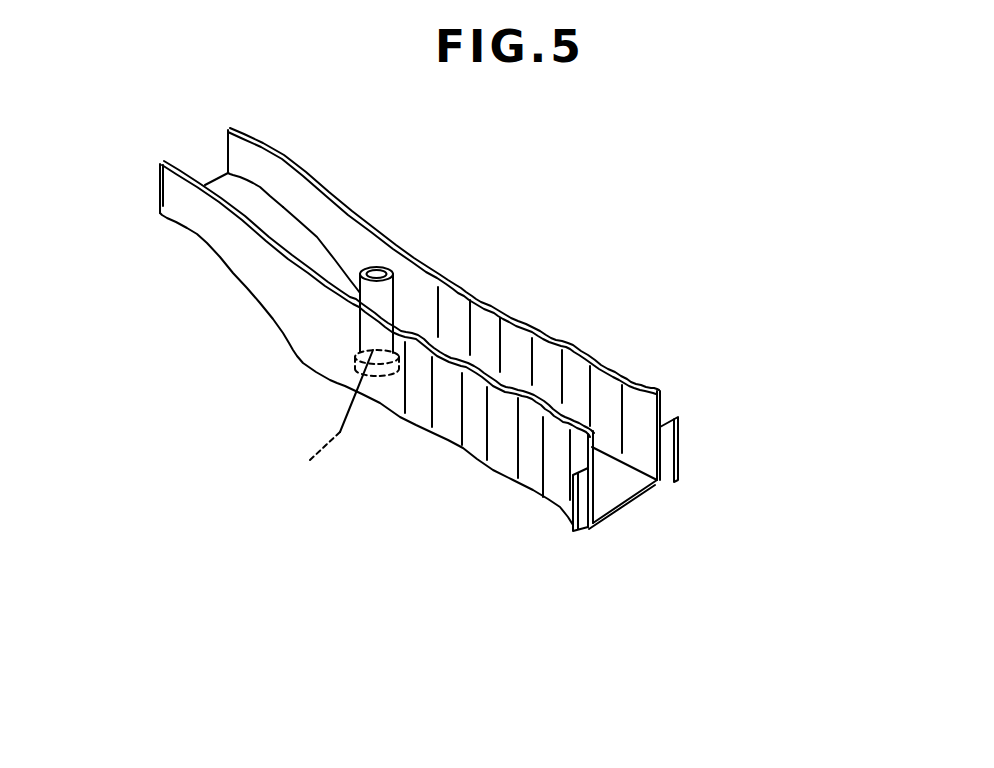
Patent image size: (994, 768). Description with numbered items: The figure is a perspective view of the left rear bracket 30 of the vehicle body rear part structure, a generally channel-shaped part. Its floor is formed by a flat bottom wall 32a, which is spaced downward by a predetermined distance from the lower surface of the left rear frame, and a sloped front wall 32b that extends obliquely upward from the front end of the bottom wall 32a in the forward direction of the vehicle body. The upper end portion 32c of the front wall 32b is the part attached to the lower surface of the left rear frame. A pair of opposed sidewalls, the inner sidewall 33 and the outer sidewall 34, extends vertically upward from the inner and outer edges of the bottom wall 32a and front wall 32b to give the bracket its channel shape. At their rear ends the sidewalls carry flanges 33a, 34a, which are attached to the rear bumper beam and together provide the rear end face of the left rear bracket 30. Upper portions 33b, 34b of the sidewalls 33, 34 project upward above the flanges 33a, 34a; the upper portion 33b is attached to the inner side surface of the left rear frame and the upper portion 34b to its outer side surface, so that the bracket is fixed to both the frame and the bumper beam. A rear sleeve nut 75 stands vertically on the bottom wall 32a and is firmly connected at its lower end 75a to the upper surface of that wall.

The left rear bracket 30 is at (477, 352).
The flat bottom wall 32a is at (617, 480).
The sloped front wall 32b is at (327, 270).
The upper end portion of the front wall 32c is at (233, 193).
The inner sidewall 33 is at (511, 305).
The flange of the inner sidewall 33a is at (667, 443).
The upper portion of the inner sidewall 33b is at (574, 358).
The outer sidewall 34 is at (377, 390).
The flange of the outer sidewall 34a is at (573, 528).
The upper portion of the outer sidewall 34b is at (497, 397).
The rear sleeve nut 75 is at (377, 300).
The lower end of the rear sleeve nut 75a is at (319, 418).